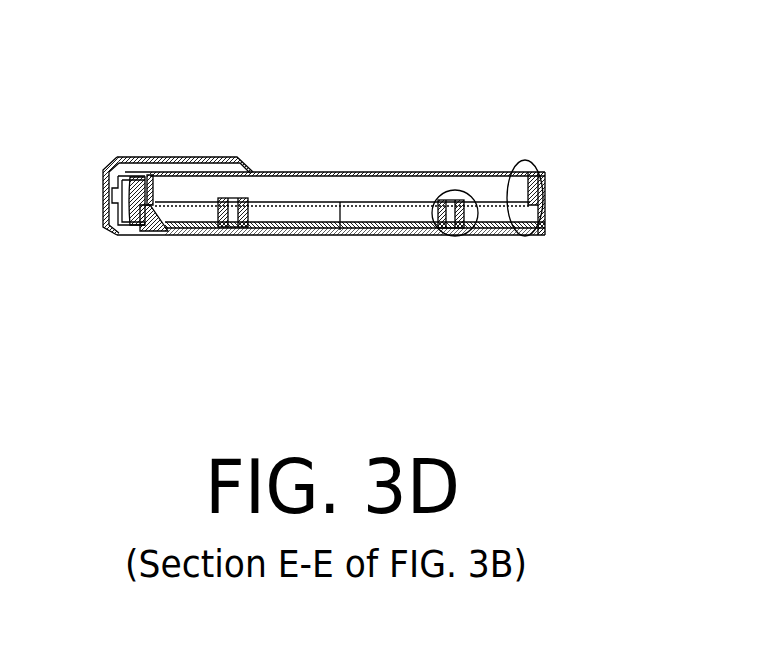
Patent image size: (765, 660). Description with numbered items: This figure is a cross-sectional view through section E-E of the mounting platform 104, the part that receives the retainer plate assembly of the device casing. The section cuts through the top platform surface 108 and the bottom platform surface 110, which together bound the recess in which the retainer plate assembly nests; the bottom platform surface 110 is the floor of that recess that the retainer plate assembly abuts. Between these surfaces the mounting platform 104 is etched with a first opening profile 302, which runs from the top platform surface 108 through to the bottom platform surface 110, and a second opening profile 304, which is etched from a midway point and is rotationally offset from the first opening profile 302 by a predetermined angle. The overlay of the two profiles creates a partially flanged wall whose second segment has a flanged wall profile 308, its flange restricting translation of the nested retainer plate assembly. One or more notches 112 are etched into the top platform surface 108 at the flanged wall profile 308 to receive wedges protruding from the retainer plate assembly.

The mounting platform 104 is at (178, 237).
The top platform surface 108 is at (256, 236).
The bottom platform surface 110 is at (287, 172).
The notches 112 is at (470, 232).
The first opening profile 302 is at (292, 210).
The second opening profile 304 is at (336, 183).
The flanged wall profile 308 is at (534, 160).